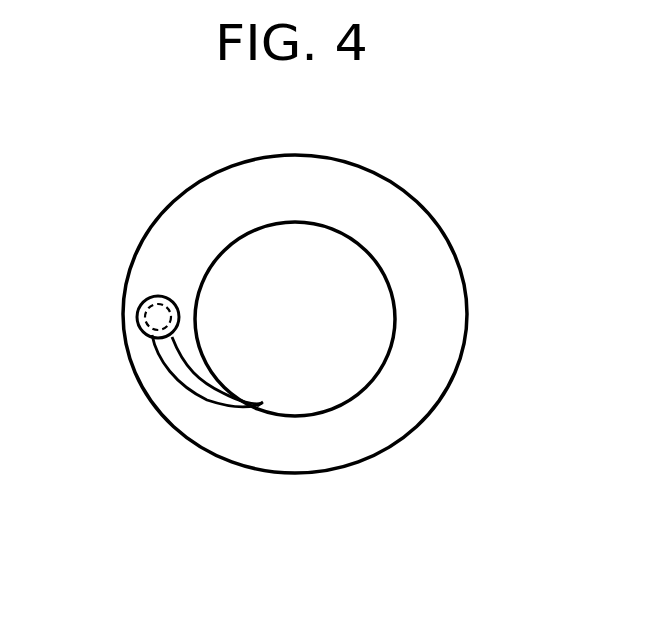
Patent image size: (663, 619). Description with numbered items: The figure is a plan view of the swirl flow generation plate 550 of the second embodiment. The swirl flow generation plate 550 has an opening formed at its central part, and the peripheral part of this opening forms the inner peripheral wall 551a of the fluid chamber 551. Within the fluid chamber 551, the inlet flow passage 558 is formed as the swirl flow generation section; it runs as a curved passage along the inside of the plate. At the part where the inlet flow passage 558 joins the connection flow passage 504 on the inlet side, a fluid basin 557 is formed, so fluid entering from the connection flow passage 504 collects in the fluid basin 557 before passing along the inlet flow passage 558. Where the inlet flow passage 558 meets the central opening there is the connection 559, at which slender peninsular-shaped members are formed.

The swirl flow generation plate 550 is at (468, 290).
The fluid chamber 551 is at (328, 332).
The inner peripheral wall 551a is at (394, 344).
The connection flow passage 504 is at (147, 313).
The fluid basin 557 is at (141, 322).
The inlet flow passage 558 is at (190, 390).
The connection 559 is at (268, 412).